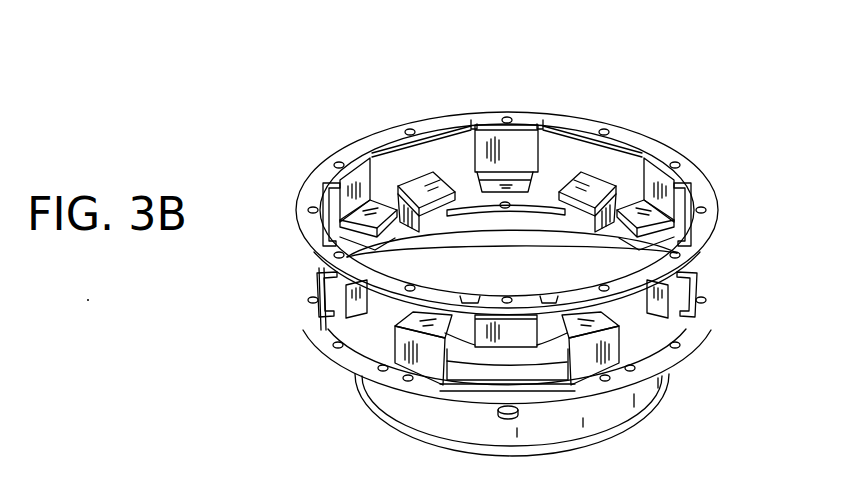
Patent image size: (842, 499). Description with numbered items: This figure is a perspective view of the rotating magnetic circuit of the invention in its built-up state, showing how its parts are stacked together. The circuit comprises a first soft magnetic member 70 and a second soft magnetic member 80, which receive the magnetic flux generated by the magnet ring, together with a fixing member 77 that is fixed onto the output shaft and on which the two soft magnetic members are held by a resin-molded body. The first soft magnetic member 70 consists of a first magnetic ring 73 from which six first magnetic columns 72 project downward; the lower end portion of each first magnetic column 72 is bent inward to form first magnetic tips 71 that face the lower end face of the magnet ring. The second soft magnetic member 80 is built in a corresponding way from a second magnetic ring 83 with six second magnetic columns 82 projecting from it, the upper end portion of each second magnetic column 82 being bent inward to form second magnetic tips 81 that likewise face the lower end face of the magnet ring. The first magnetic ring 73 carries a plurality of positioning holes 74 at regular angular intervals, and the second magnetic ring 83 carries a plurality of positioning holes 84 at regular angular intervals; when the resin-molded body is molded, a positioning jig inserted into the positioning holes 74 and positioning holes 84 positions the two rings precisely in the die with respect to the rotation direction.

The first soft magnetic member 70 is at (529, 108).
The first magnetic tips 71 is at (627, 196).
The first magnetic columns 72 is at (655, 172).
The first magnetic ring 73 is at (684, 173).
The positioning holes 74 is at (702, 211).
The fixing member 77 is at (391, 424).
The second soft magnetic member 80 is at (298, 275).
The second magnetic tips 81 is at (598, 182).
The second magnetic columns 82 is at (580, 217).
The second magnetic ring 83 is at (297, 310).
The positioning holes 84 is at (320, 345).